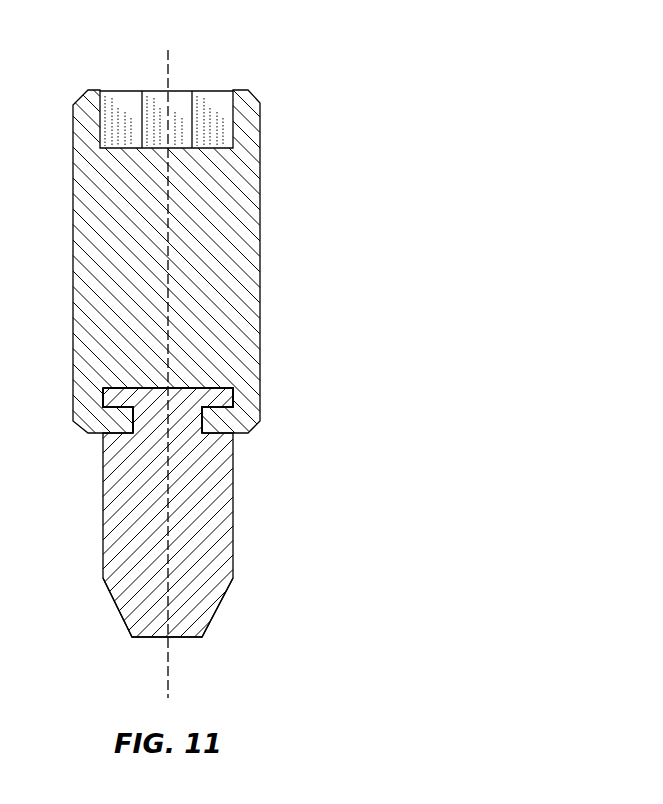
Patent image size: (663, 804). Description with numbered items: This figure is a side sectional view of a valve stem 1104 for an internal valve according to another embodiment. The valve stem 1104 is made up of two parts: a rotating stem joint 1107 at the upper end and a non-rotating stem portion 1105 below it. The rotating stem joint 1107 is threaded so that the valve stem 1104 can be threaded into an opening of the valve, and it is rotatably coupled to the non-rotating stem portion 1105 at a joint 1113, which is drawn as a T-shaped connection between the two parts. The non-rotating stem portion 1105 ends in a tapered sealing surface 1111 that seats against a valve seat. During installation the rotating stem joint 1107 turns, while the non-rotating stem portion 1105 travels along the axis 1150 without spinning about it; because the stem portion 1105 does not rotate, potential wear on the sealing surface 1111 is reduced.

The valve stem 1104 is at (272, 40).
The rotating stem joint 1107 is at (261, 155).
The non-rotating stem portion 1105 is at (214, 512).
The sealing surface 1111 is at (218, 600).
The joint 1113 is at (268, 405).
The axis 1150 is at (167, 655).